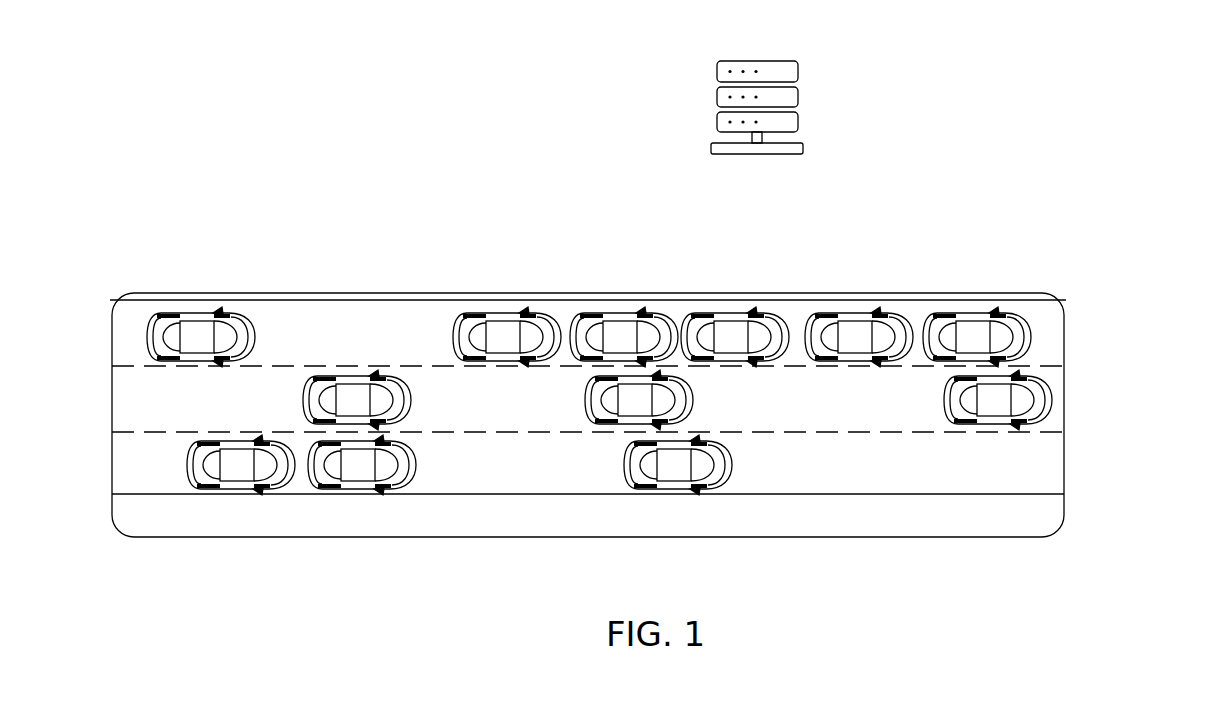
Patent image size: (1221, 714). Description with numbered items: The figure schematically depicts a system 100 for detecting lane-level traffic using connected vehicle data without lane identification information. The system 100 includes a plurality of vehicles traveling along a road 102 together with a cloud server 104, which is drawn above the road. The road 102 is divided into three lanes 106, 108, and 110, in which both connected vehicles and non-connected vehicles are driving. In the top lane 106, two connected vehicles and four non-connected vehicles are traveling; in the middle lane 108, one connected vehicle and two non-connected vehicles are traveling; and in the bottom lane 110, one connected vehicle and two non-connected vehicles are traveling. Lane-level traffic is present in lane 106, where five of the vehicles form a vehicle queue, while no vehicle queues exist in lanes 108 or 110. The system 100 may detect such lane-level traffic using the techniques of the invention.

The system 100 is at (208, 171).
The road 102 is at (316, 527).
The cloud server 104 is at (717, 72).
The lane 106 is at (1078, 336).
The lane 108 is at (1078, 403).
The lane 110 is at (1078, 468).